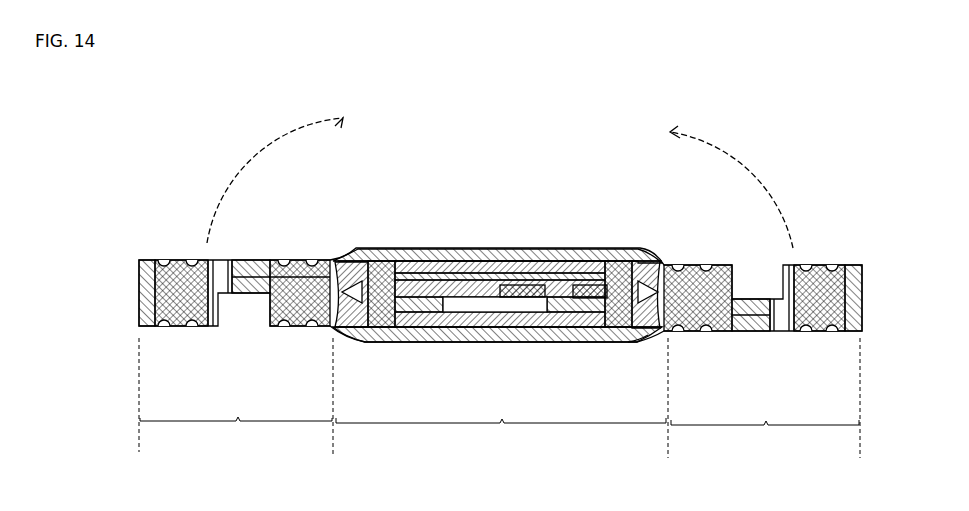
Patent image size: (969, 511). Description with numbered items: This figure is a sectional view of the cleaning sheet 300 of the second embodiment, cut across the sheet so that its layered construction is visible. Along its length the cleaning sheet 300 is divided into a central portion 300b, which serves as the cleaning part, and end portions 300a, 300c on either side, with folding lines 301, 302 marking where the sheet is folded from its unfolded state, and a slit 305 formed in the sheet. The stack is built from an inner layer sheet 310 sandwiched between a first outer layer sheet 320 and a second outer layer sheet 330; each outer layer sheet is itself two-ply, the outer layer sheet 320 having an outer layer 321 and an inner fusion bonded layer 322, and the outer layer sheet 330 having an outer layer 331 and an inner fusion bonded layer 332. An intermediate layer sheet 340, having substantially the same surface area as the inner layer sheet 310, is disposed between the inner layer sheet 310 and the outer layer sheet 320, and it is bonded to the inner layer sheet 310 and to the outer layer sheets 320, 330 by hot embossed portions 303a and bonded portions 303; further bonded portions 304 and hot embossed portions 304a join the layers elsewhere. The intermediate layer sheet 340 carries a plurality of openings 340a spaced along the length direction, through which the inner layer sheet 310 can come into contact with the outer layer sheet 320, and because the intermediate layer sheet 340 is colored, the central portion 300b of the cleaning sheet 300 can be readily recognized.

The cleaning sheet 300 is at (408, 134).
The end portion 300a is at (761, 456).
The central portion 300b is at (521, 458).
The end portion 300c is at (266, 447).
The folding line 301 is at (633, 350).
The folding line 302 is at (357, 250).
The bonded portion 303 is at (379, 250).
The hot embossed portion 303a is at (412, 250).
The bonded portion 304 is at (297, 259).
The hot embossed portion 304a is at (262, 259).
The slit 305 is at (231, 259).
The inner layer sheet 310 is at (491, 248).
The outer layer sheet 320 is at (587, 347).
The outer layer 321 is at (465, 343).
The inner layer 322 is at (430, 343).
The outer layer sheet 330 is at (457, 245).
The outer layer 331 is at (527, 248).
The inner layer 332 is at (555, 248).
The intermediate layer sheet 340 is at (592, 248).
The openings 340a is at (522, 343).